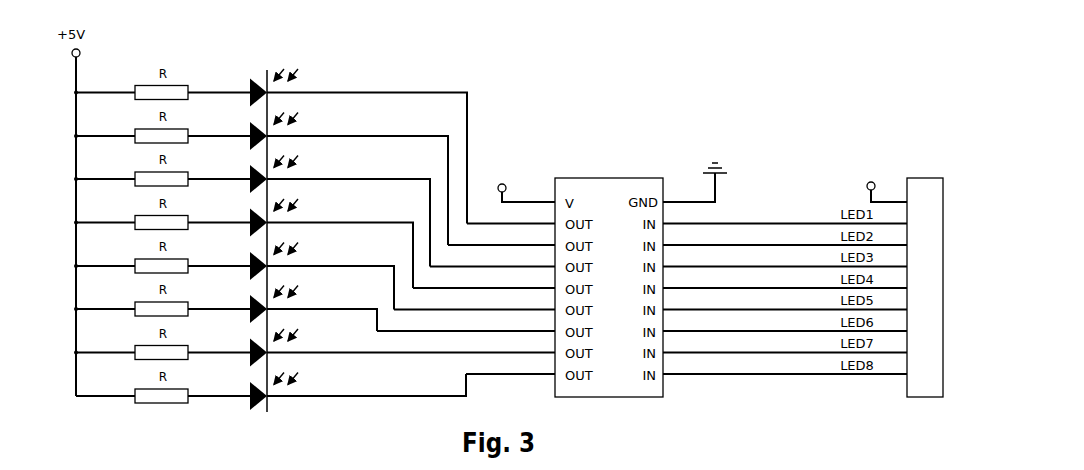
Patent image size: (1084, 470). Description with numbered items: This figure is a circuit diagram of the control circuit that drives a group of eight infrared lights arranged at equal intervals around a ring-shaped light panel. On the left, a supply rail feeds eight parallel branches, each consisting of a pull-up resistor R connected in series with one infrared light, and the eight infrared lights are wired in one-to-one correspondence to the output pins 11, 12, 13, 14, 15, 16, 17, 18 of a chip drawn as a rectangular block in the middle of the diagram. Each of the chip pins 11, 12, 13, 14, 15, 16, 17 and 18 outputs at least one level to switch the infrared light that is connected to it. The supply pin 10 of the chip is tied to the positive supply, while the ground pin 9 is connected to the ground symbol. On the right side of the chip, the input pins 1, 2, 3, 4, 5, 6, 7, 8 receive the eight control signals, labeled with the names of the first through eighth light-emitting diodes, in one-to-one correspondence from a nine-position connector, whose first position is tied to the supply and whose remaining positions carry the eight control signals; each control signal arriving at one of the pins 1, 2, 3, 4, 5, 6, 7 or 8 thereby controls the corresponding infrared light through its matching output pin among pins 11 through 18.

The pin 1 of the chip 1 is at (806, 261).
The pin 2 of the chip 2 is at (793, 287).
The pin 3 of the chip 3 is at (793, 287).
The pin 4 of the chip 4 is at (793, 287).
The pin 5 of the chip 5 is at (793, 285).
The pin 6 of the chip 6 is at (793, 286).
The pin 7 of the chip 7 is at (793, 285).
The pin 8 of the chip 8 is at (793, 285).
The pin 9 (GND) 9 is at (793, 275).
The pin 10 (V supply) 10 is at (521, 174).
The pin 11 of the chip 11 is at (511, 214).
The pin 12 of the chip 12 is at (501, 235).
The pin 13 of the chip 13 is at (492, 257).
The pin 14 of the chip 14 is at (484, 278).
The pin 15 of the chip 15 is at (474, 300).
The pin 16 of the chip 16 is at (466, 321).
The pin 17 of the chip 17 is at (477, 343).
The pin 18 of the chip 18 is at (510, 364).